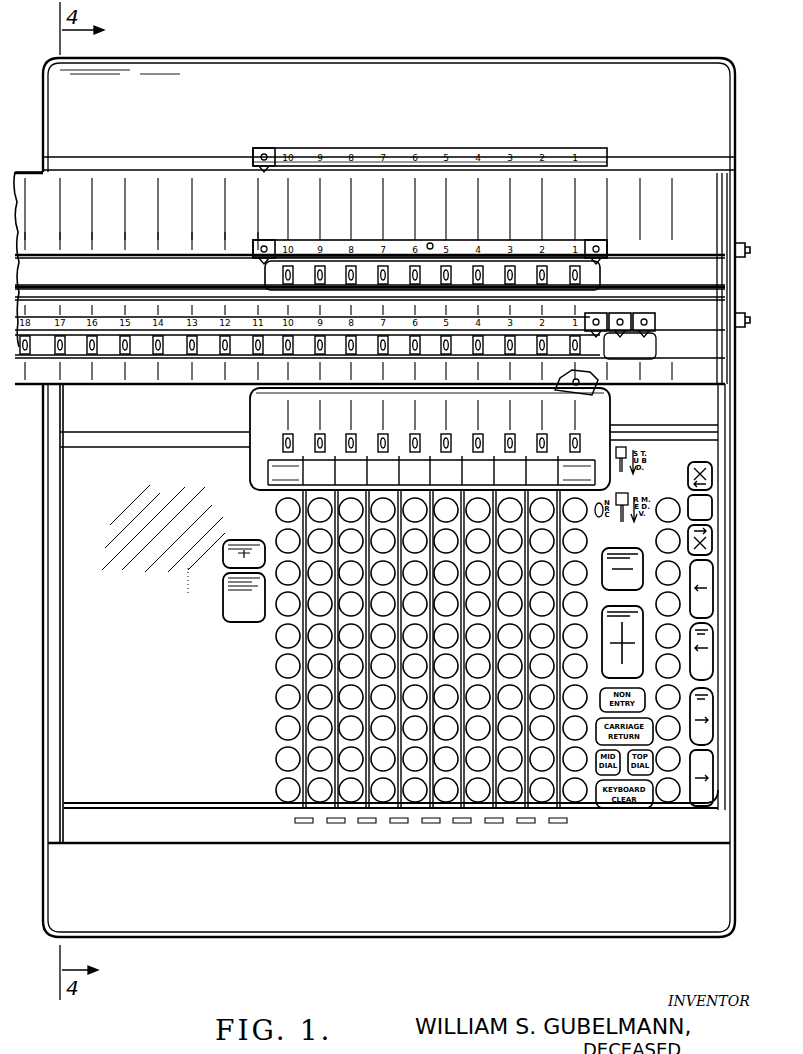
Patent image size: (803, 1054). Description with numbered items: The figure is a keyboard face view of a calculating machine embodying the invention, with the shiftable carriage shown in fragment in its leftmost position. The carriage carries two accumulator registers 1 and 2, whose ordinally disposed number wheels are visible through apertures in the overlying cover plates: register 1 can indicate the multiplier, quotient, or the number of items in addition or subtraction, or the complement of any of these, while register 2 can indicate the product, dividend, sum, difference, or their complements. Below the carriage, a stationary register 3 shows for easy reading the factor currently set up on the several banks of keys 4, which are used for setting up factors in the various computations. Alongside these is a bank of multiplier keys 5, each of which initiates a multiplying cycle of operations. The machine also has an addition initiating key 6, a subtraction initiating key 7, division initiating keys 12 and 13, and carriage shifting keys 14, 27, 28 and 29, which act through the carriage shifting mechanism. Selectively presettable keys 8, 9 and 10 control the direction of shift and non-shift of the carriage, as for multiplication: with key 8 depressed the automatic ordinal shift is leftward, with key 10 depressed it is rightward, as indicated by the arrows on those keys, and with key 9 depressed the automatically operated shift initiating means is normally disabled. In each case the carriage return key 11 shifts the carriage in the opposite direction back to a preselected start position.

The accumulator register 1 is at (603, 266).
The accumulator register 2 is at (657, 337).
The stationary register 3 is at (586, 458).
The keys 4 is at (582, 805).
The multiplier keys 5 is at (655, 817).
The addition initiating key 6 is at (622, 642).
The subtraction initiating key 7 is at (620, 549).
The presettable key 8 is at (712, 480).
The presettable key 9 is at (712, 507).
The presettable key 10 is at (712, 540).
The carriage return key 11 is at (600, 720).
The division initiating key 12 is at (223, 610).
The division initiating key 13 is at (223, 553).
The carriage shifting key 14 is at (713, 778).
The carriage shifting key 27 is at (710, 587).
The carriage shifting key 28 is at (710, 654).
The carriage shifting key 29 is at (710, 718).